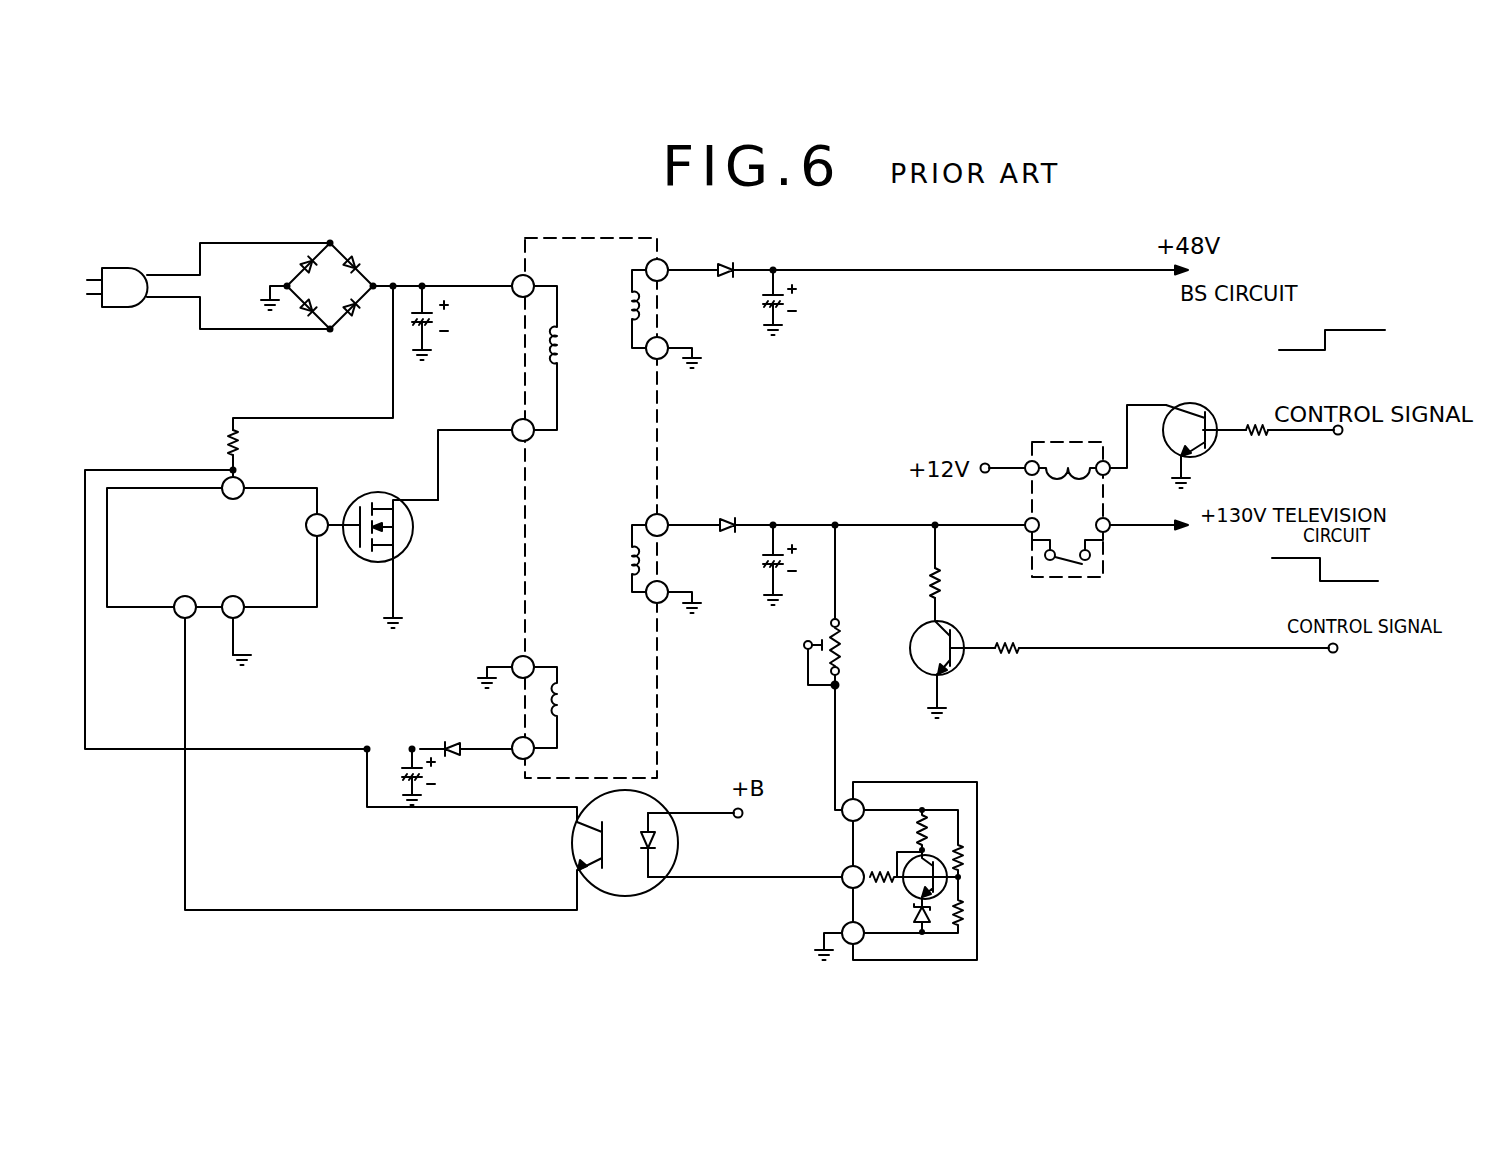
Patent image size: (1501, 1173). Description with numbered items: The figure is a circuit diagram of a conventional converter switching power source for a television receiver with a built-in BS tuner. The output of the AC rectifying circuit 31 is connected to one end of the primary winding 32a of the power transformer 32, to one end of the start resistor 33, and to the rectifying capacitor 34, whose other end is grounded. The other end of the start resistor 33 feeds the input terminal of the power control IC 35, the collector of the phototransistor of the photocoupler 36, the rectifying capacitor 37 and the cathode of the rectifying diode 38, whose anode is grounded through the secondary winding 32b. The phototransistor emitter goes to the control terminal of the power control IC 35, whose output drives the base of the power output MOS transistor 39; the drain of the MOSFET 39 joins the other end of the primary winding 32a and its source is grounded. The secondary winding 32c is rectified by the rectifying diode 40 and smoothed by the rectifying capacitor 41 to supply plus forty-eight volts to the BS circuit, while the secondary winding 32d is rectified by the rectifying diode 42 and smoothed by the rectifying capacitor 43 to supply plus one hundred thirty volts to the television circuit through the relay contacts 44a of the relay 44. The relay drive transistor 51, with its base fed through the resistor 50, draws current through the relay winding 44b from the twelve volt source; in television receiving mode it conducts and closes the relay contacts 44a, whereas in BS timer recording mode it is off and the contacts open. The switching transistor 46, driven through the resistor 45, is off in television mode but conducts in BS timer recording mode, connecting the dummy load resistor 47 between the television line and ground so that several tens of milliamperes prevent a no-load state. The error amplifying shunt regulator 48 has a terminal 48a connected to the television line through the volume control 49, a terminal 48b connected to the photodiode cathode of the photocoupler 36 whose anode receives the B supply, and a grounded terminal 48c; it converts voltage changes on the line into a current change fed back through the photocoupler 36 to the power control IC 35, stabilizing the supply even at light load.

The AC rectifying circuit 31 is at (358, 256).
The power transformer 32 is at (603, 238).
The primary winding 32a is at (567, 343).
The secondary winding 32b is at (568, 698).
The secondary winding 32c is at (627, 305).
The secondary winding 32d is at (627, 565).
The start resistor 33 is at (228, 443).
The rectifying capacitor 34 is at (440, 315).
The power control IC 35 is at (268, 486).
The photocoupler 36 is at (640, 897).
The rectifying capacitor 37 is at (432, 768).
The rectifying diode 38 is at (457, 740).
The power output MOS transistor 39 is at (373, 492).
The rectifying diode 40 is at (727, 262).
The rectifying capacitor 41 is at (792, 297).
The rectifying diode 42 is at (727, 515).
The rectifying capacitor 43 is at (760, 565).
The relay 44 is at (1070, 442).
The relay contacts 44a is at (1100, 561).
The relay winding 44b is at (1065, 482).
The resistor 45 is at (1003, 640).
The switching transistor 46 is at (963, 633).
The dummy load resistor 47 is at (940, 573).
The error amplifying shunt regulator 48 is at (978, 872).
The terminal 48a is at (843, 825).
The terminal 48b is at (843, 888).
The terminal 48c is at (840, 923).
The volume control 49 is at (842, 645).
The resistor 50 is at (1260, 426).
The relay drive transistor 51 is at (1200, 406).